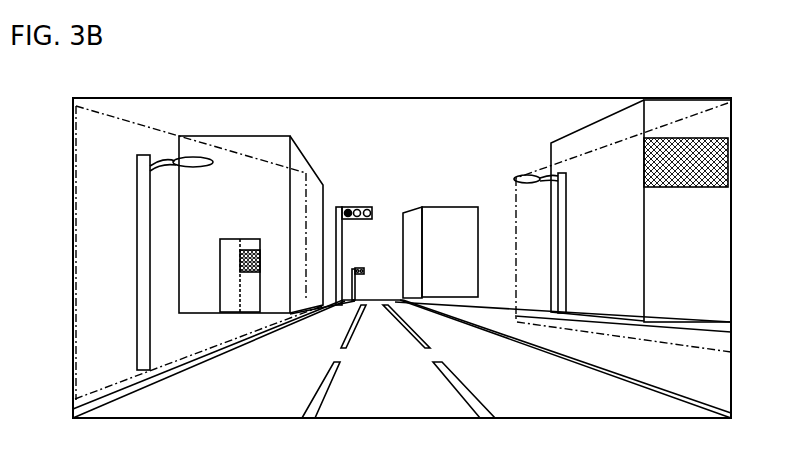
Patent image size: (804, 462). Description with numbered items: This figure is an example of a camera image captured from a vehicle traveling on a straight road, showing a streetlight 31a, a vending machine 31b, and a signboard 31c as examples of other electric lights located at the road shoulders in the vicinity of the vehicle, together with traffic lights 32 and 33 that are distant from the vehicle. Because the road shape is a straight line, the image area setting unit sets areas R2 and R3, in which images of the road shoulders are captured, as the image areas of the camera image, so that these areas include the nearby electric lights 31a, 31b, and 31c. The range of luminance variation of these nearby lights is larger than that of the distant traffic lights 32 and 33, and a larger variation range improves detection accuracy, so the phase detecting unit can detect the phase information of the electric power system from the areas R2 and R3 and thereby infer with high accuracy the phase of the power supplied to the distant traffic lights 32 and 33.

The streetlight 31a is at (192, 170).
The vending machine 31b is at (233, 238).
The signboard 31c is at (686, 190).
The traffic light 32 is at (359, 204).
The traffic light 33 is at (358, 267).
The area R2 is at (690, 350).
The area R3 is at (107, 391).